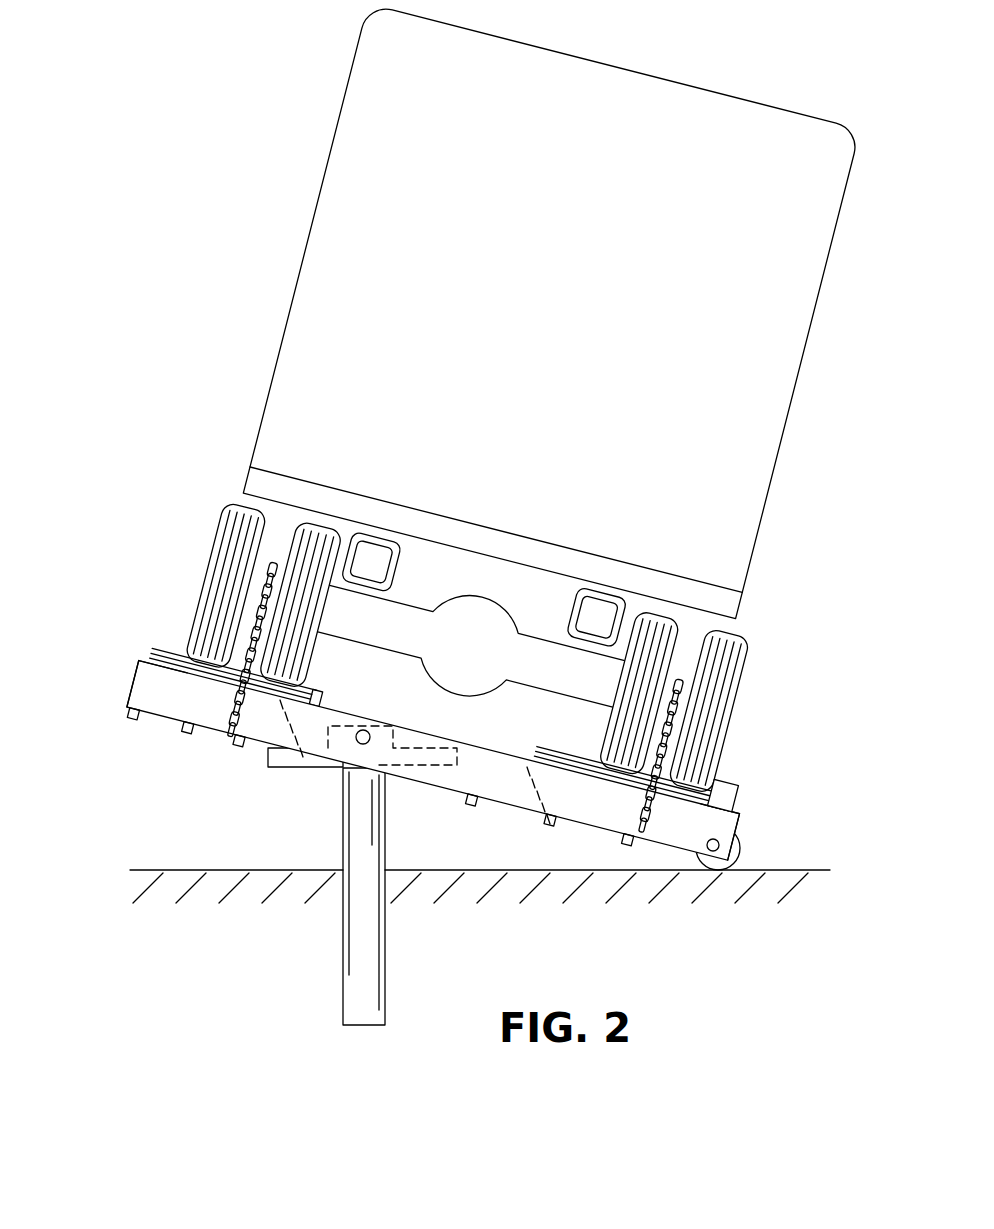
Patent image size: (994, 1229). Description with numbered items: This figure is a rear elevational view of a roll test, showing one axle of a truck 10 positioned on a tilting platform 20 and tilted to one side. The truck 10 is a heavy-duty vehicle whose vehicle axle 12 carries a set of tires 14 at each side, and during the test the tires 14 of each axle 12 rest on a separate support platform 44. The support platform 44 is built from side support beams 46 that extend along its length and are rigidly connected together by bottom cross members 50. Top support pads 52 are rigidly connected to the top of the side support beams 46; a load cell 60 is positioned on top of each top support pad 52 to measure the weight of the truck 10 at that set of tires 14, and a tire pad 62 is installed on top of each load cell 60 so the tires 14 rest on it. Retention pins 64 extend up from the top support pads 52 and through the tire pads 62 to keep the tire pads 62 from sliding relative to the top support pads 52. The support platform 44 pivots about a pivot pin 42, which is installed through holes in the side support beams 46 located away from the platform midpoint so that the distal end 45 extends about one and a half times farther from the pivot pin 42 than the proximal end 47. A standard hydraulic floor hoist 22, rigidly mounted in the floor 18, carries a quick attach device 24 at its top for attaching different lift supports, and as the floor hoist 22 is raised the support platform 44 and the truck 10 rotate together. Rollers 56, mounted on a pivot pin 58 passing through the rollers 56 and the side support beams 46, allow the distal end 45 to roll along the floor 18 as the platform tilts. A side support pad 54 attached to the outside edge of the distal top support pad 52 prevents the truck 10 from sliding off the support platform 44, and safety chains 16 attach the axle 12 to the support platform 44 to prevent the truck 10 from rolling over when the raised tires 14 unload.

The truck 10 is at (281, 346).
The vehicle axle 12 is at (402, 655).
The tires 14 is at (231, 505).
The safety chain 16 is at (222, 713).
The floor 18 is at (188, 866).
The tilting platform 20 is at (430, 743).
The floor hoist 22 is at (340, 840).
The quick attach device 24 is at (287, 772).
The pivot pin 42 is at (373, 737).
The support platform 44 is at (418, 790).
The distal end 45 is at (739, 826).
The side support beams 46 is at (493, 789).
The proximal end 47 is at (126, 684).
The bottom cross members 50 is at (179, 733).
The top support pads 52 is at (145, 657).
The side support pad 54 is at (721, 793).
The rollers 56 is at (741, 852).
The pivot pin 58 is at (706, 849).
The load cell 60 is at (162, 659).
The tire pad 62 is at (168, 652).
The retention pins 64 is at (178, 655).